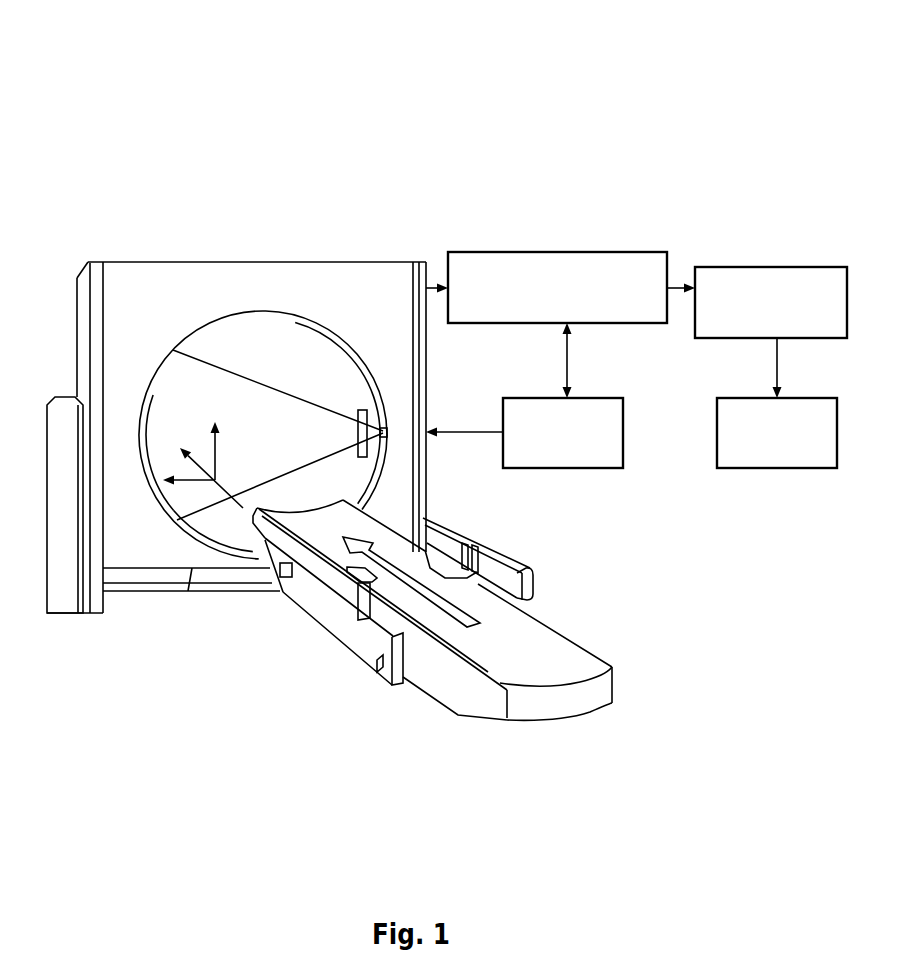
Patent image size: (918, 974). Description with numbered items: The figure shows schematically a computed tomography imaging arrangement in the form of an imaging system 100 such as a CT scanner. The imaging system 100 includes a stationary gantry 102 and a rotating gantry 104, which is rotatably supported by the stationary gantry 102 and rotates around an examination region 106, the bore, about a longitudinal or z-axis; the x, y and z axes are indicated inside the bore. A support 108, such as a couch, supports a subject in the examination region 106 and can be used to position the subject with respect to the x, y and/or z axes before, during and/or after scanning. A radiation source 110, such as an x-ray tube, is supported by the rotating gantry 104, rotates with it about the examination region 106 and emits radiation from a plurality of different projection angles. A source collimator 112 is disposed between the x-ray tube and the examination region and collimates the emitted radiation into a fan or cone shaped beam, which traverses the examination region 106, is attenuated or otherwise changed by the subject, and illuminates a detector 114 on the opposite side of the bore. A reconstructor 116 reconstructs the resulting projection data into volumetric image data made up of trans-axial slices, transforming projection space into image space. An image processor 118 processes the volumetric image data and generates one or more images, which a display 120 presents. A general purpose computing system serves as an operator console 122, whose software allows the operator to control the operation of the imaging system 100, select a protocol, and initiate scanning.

The imaging system 100 is at (126, 118).
The stationary gantry 102 is at (163, 262).
The rotating gantry 104 is at (182, 342).
The examination region 106 is at (280, 447).
The support 108 is at (555, 653).
The radiation source 110 is at (389, 436).
The source collimator 112 is at (358, 413).
The detector 114 is at (158, 385).
The reconstructor 116 is at (512, 260).
The image processor 118 is at (743, 262).
The display 120 is at (812, 448).
The operator console 122 is at (580, 448).